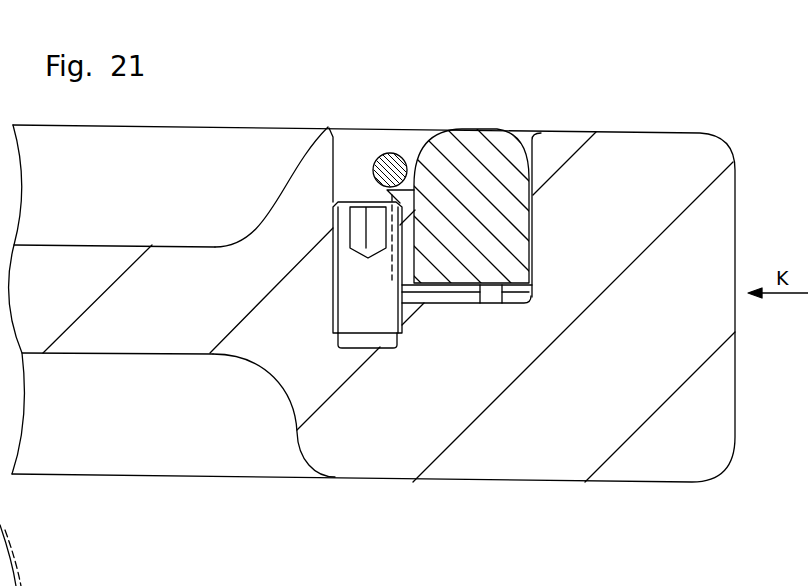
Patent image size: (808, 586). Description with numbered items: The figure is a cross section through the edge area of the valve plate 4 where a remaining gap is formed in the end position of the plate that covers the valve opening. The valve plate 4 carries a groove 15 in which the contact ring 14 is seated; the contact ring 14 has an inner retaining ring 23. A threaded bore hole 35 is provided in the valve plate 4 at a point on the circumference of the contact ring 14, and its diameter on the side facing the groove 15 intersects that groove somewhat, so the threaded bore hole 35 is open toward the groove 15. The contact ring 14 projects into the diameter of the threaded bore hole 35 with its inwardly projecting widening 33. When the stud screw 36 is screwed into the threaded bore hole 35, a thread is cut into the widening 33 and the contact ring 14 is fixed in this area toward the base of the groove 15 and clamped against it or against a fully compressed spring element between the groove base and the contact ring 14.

The valve plate 4 is at (157, 335).
The contact ring 14 is at (464, 152).
The groove 15 is at (0, 522).
The inner retaining ring 23 is at (391, 158).
The inwardly projecting widening 33 is at (425, 268).
The threaded bore hole 35 is at (355, 155).
The stud screw 36 is at (353, 270).